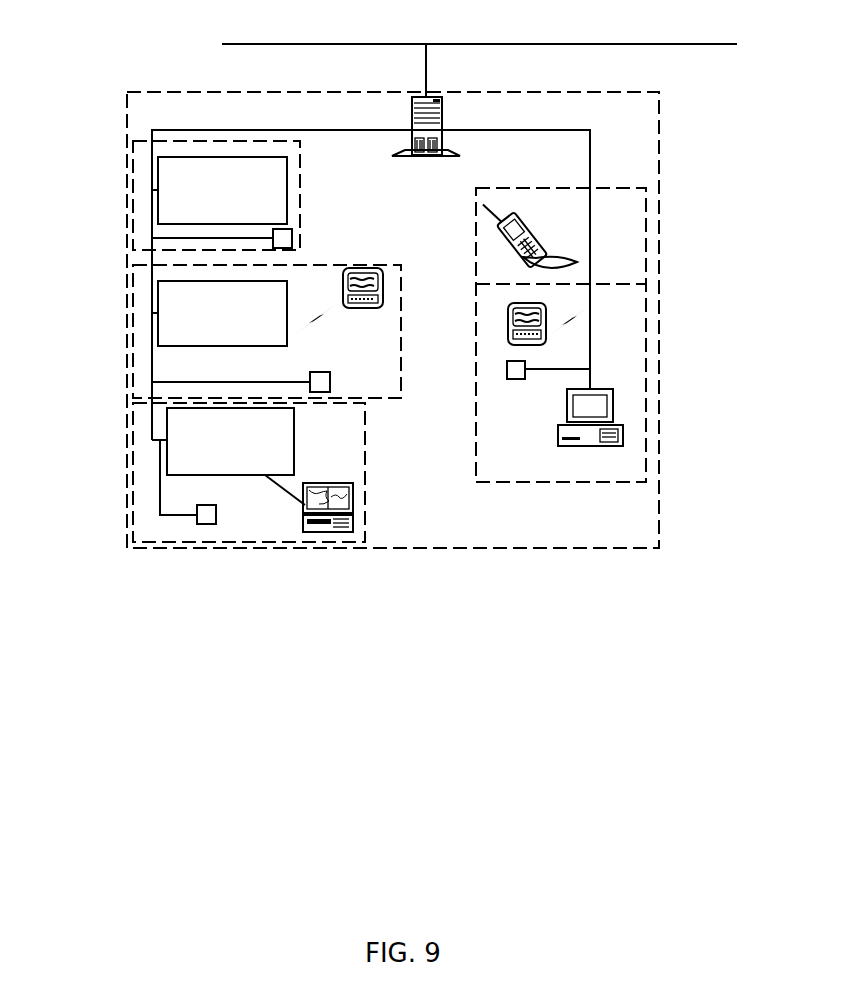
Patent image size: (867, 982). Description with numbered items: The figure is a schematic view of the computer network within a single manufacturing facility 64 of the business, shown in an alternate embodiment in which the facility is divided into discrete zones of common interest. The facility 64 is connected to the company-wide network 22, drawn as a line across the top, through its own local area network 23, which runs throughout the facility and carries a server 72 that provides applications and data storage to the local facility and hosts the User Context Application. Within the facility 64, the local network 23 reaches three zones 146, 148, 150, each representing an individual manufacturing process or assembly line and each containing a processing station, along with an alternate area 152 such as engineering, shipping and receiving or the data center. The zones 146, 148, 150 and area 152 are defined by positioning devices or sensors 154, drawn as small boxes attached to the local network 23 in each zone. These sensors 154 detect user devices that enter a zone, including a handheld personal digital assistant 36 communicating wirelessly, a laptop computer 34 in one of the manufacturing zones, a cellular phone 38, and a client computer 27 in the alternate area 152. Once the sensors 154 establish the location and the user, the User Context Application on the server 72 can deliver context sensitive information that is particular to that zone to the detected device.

The network 22 is at (528, 44).
The manufacturing facility 64 is at (255, 92).
The local area network 23 is at (258, 130).
The server 72 is at (425, 157).
The zone 146 is at (133, 192).
The zone 148 is at (133, 345).
The zone 150 is at (133, 460).
The area 152 is at (648, 380).
The positioning device or sensor 154 is at (292, 234).
The handheld personal digital assistant 36 is at (378, 265).
The cellular phone 38 is at (530, 233).
The laptop computer 34 is at (308, 482).
The client computer 27 is at (560, 432).